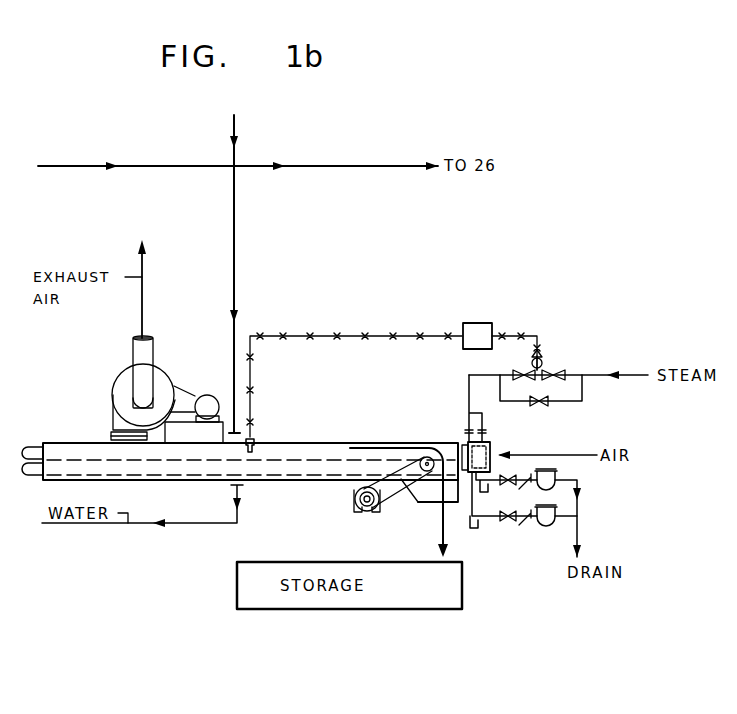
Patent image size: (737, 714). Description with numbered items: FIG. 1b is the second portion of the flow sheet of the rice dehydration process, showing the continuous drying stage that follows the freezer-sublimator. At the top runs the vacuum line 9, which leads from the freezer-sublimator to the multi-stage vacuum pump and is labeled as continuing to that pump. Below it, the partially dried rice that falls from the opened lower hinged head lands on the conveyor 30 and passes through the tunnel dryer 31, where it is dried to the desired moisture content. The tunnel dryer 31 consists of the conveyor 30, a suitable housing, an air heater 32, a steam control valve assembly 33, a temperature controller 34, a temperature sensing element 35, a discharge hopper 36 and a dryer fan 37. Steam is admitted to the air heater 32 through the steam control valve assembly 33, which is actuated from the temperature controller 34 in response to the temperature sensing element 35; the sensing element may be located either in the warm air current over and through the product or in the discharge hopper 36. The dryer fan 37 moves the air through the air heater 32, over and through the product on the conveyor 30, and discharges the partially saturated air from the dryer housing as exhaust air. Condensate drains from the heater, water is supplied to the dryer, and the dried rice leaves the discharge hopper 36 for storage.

The vacuum line 9 is at (178, 164).
The conveyor 30 is at (307, 477).
The tunnel dryer 31 is at (349, 447).
The air heater 32 is at (490, 446).
The steam control valve assembly 33 is at (542, 370).
The temperature controller 34 is at (478, 322).
The temperature sensing element 35 is at (256, 440).
The discharge hopper 36 is at (430, 503).
The dryer fan 37 is at (122, 419).